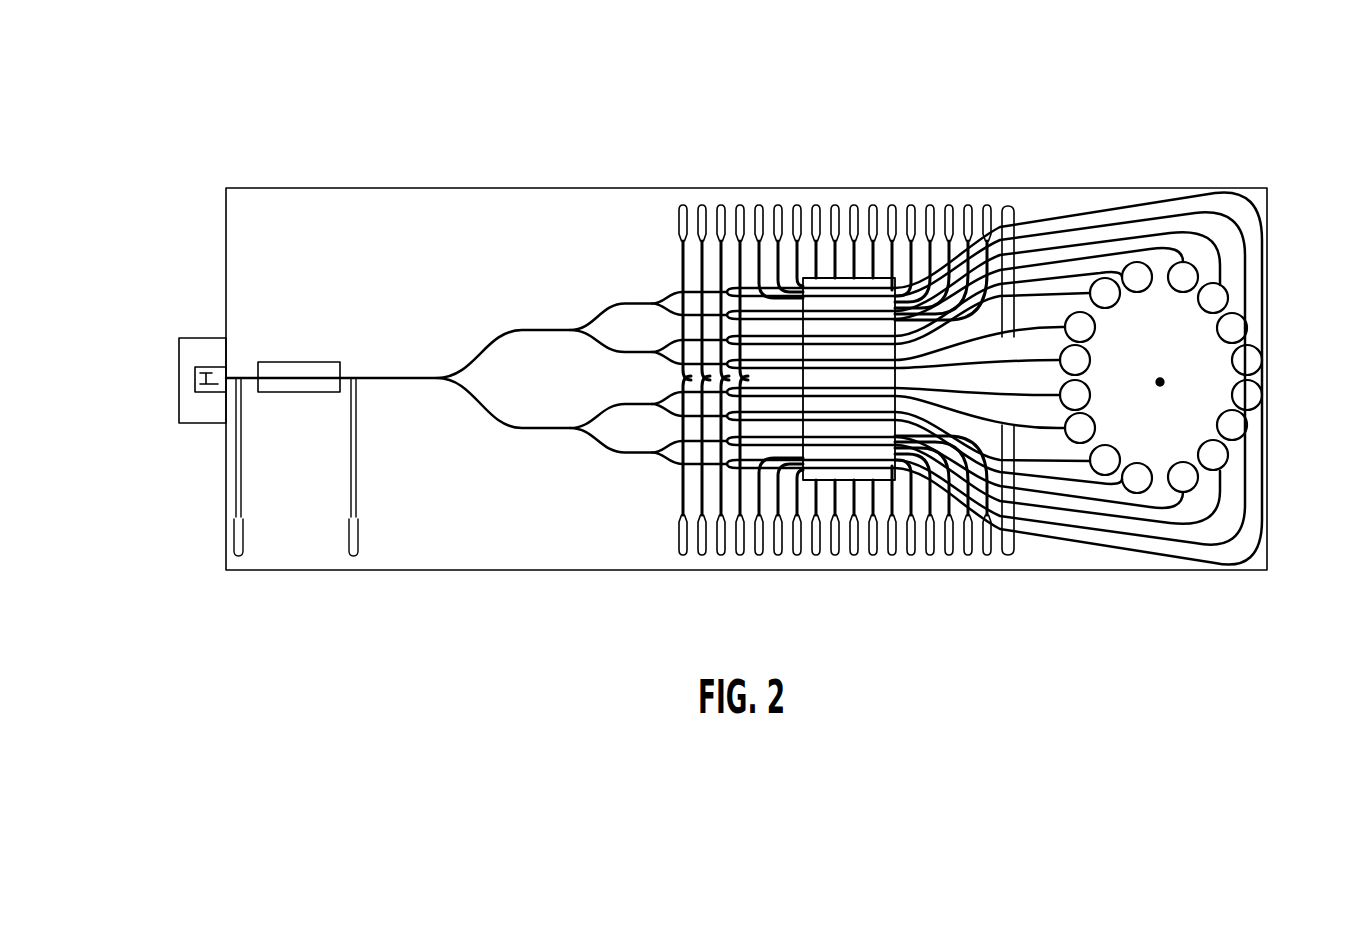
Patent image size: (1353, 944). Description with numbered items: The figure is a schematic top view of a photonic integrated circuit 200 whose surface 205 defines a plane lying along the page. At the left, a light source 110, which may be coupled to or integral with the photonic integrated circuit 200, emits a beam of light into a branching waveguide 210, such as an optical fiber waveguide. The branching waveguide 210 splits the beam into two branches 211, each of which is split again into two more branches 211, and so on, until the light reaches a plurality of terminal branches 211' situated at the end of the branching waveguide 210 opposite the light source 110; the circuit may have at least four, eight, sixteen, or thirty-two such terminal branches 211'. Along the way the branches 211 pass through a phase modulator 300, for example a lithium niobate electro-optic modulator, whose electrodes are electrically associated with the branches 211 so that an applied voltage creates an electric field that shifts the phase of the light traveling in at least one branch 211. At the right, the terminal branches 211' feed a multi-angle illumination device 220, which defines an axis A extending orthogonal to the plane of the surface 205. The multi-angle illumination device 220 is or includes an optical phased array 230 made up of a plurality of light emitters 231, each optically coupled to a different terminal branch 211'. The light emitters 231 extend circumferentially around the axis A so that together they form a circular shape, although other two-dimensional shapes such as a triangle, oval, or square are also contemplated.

The photonic integrated circuit 200 is at (342, 116).
The light source 110 is at (202, 425).
The surface 205 is at (489, 532).
The branching waveguide 210 is at (577, 308).
The branches 211 is at (706, 385).
The terminal branches 211' is at (1109, 354).
The phase modulator 300 is at (832, 214).
The multi-angle illumination device 220 is at (1191, 340).
The optical phased array 230 is at (1180, 258).
The light emitters 231 is at (1172, 500).
The axis A is at (1165, 382).